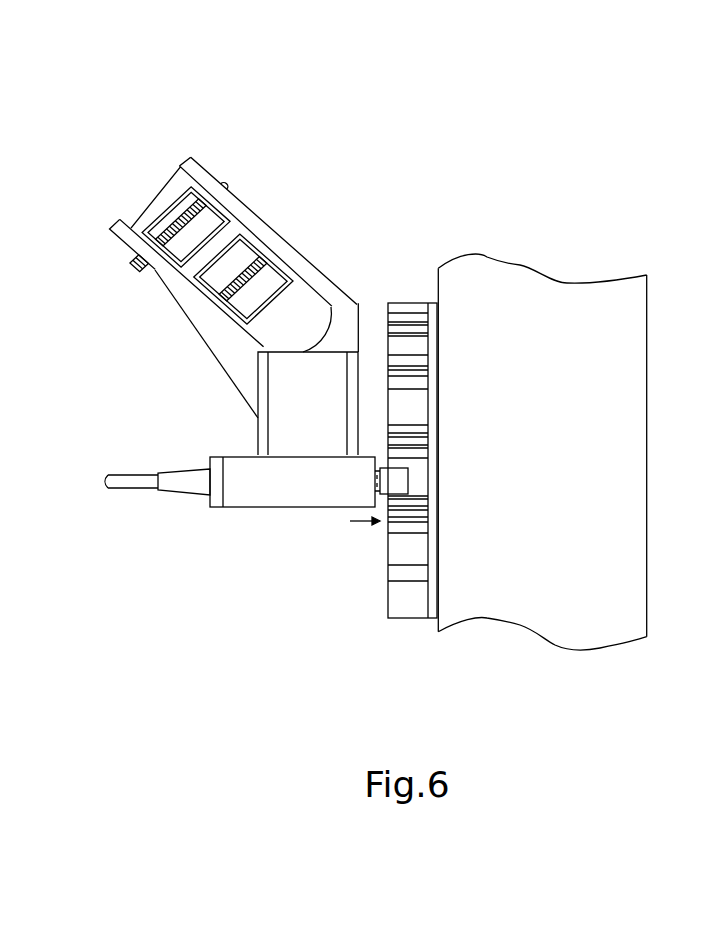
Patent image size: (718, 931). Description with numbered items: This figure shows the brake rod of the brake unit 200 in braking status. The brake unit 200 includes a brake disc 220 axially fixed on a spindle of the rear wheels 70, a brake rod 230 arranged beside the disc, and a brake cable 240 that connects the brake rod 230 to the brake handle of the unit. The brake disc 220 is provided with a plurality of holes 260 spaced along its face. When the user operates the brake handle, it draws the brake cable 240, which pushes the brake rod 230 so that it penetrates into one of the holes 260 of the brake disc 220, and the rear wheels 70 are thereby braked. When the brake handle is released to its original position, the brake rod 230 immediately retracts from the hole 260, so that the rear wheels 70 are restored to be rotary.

The brake unit 200 is at (374, 208).
The brake disc 220 is at (392, 603).
The brake rod 230 is at (300, 452).
The brake cable 240 is at (137, 480).
The holes 260 is at (408, 345).
The rear wheels 70 is at (555, 281).